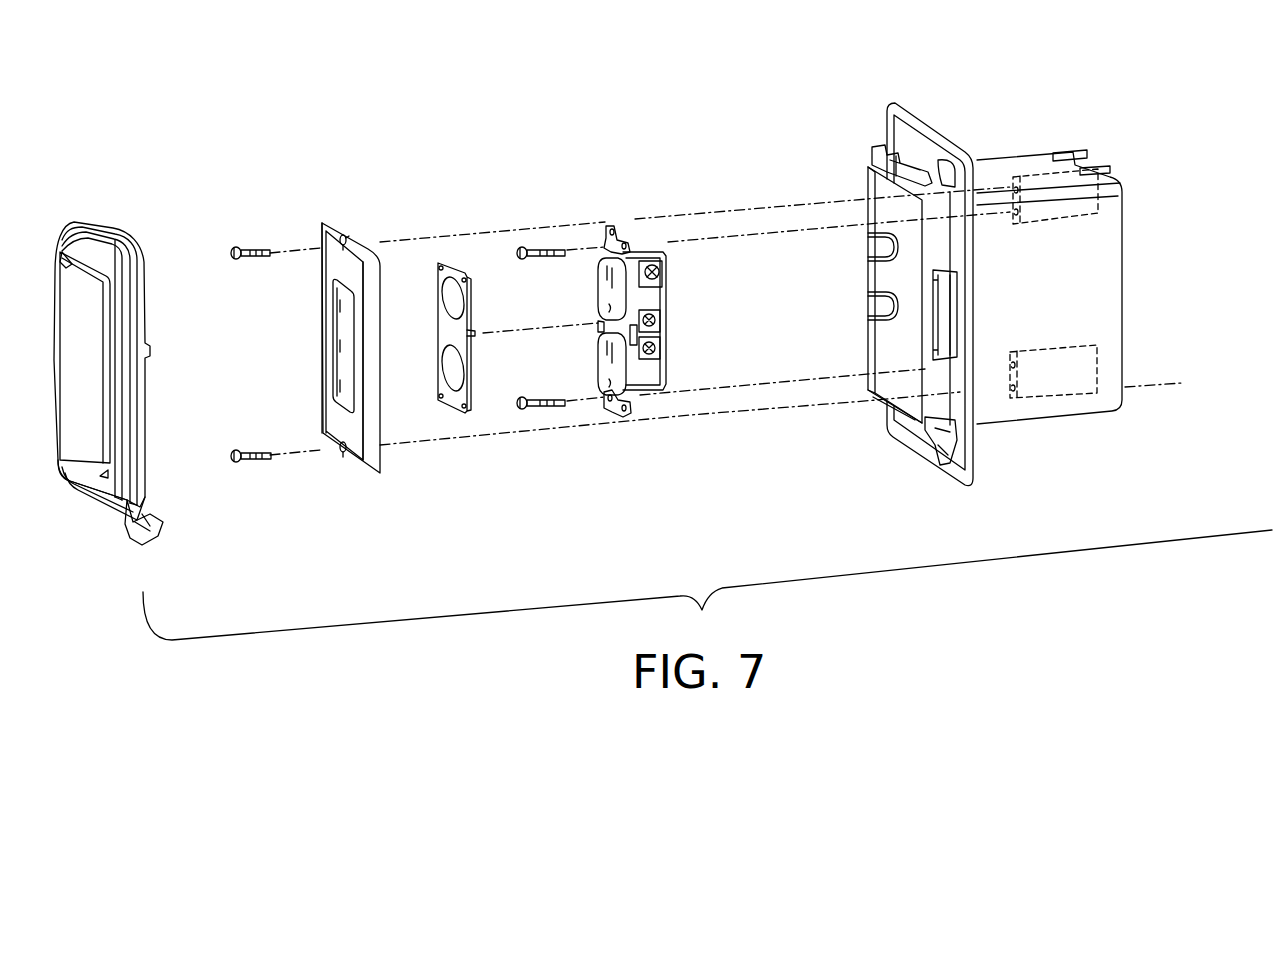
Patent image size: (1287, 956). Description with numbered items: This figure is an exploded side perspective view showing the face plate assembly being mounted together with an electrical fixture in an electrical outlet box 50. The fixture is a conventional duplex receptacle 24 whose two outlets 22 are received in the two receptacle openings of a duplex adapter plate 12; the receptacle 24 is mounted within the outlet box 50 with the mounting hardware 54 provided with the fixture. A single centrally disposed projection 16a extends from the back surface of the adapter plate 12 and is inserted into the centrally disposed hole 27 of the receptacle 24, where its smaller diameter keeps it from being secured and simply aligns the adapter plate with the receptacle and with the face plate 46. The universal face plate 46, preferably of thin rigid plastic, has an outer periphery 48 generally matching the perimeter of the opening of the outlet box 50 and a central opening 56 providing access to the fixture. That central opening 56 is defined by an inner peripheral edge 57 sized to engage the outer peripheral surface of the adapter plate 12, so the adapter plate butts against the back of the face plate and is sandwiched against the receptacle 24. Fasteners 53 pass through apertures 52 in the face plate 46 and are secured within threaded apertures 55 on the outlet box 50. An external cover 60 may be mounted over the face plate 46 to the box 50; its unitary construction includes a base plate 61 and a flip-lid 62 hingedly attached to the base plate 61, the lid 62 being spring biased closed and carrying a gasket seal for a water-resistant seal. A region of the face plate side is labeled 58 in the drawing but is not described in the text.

The duplex adapter plate 12 is at (489, 376).
The centrally disposed projection 16a is at (483, 330).
The outlets 22 is at (612, 326).
The duplex receptacle 24 is at (645, 257).
The centrally disposed hole 27 is at (598, 325).
The face plate 46 is at (335, 341).
The outer periphery 48 is at (360, 467).
The electrical outlet box 50 is at (995, 269).
The apertures 52 is at (345, 240).
The fastener 53 is at (237, 250).
The mounting hardware 54 is at (527, 252).
The threaded apertures 55 is at (1040, 175).
The central opening 56 is at (357, 363).
The inner peripheral edge 57 is at (350, 390).
The plate side wall 58 is at (322, 342).
The external cover 60 is at (102, 349).
The base plate 61 is at (117, 232).
The flip-lid 62 is at (72, 326).